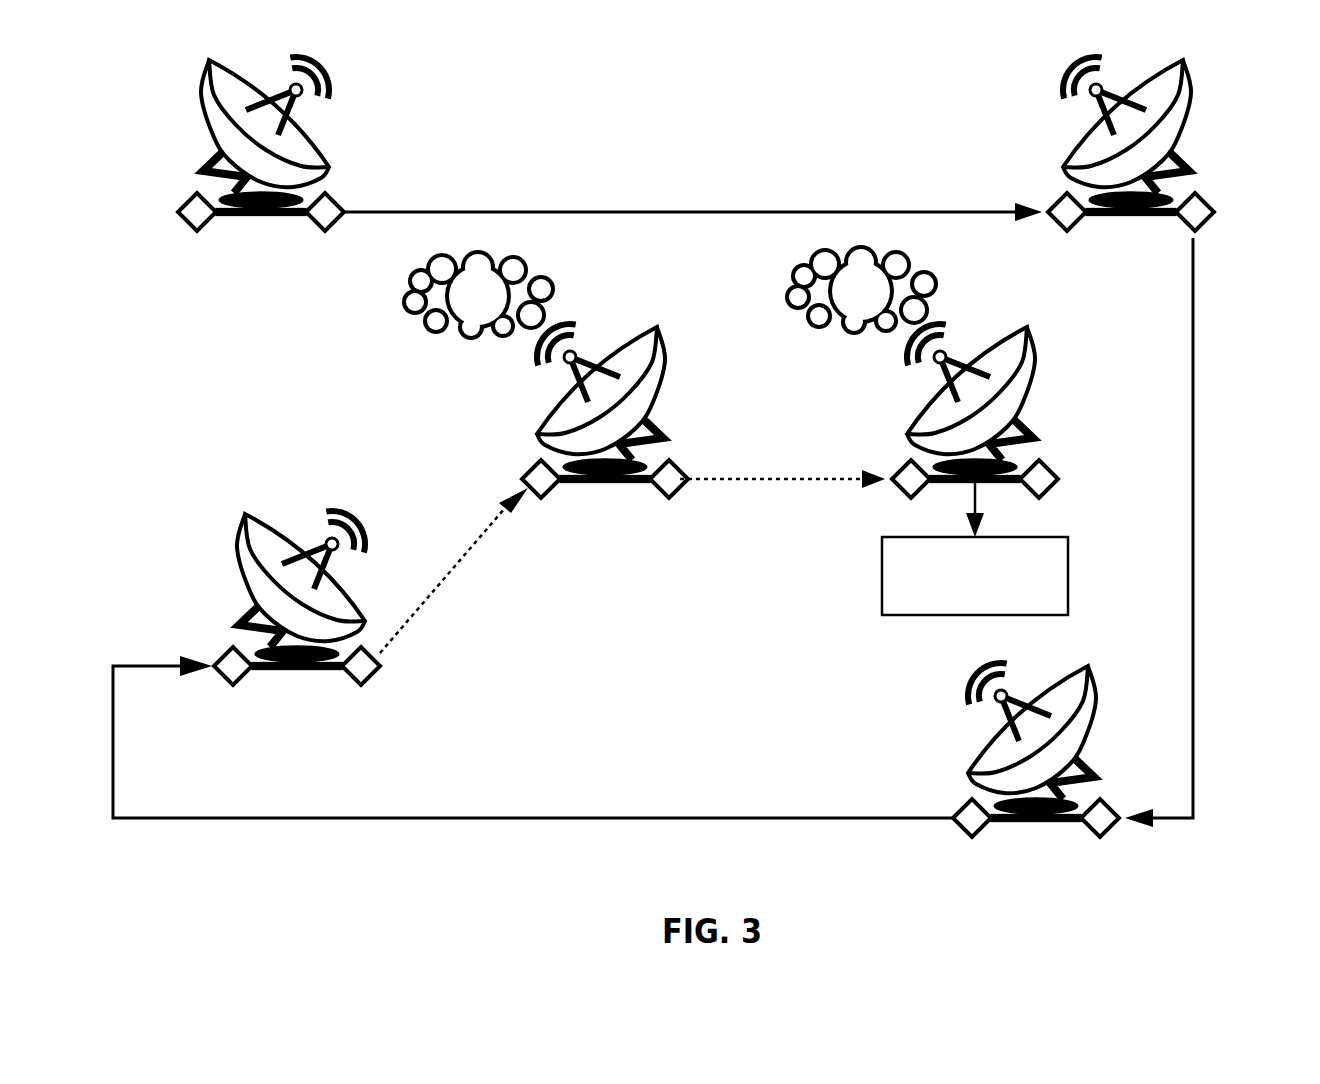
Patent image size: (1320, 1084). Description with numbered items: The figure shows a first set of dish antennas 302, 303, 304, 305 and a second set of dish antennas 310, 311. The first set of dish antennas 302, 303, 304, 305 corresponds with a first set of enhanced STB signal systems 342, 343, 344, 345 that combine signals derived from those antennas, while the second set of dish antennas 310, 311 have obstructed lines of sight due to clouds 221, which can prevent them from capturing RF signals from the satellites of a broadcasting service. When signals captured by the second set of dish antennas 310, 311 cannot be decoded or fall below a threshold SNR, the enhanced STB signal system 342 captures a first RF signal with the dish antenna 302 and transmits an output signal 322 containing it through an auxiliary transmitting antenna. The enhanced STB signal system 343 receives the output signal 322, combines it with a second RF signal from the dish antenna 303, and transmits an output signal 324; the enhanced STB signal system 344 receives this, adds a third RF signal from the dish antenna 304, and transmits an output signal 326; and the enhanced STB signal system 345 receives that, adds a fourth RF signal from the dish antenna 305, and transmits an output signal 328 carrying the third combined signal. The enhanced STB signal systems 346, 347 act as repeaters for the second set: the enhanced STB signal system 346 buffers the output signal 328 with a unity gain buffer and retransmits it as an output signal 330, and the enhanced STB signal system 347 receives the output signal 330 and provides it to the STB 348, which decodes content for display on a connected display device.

The clouds 221 is at (670, 292).
The dish antenna 302 is at (292, 155).
The dish antenna 303 is at (1129, 157).
The dish antenna 304 is at (1006, 762).
The dish antenna 305 is at (296, 608).
The dish antenna 310 is at (606, 421).
The dish antenna 311 is at (975, 421).
The output signal 322 is at (670, 212).
The output signal 324 is at (1195, 400).
The output signal 326 is at (600, 818).
The output signal 328 is at (473, 548).
The output signal 330 is at (787, 476).
The enhanced STB signal system 342 is at (327, 212).
The enhanced STB signal system 343 is at (1195, 213).
The enhanced STB signal system 344 is at (973, 820).
The enhanced STB signal system 345 is at (363, 662).
The enhanced STB signal system 346 is at (680, 483).
The enhanced STB signal system 347 is at (1040, 478).
The STB 348 is at (975, 549).